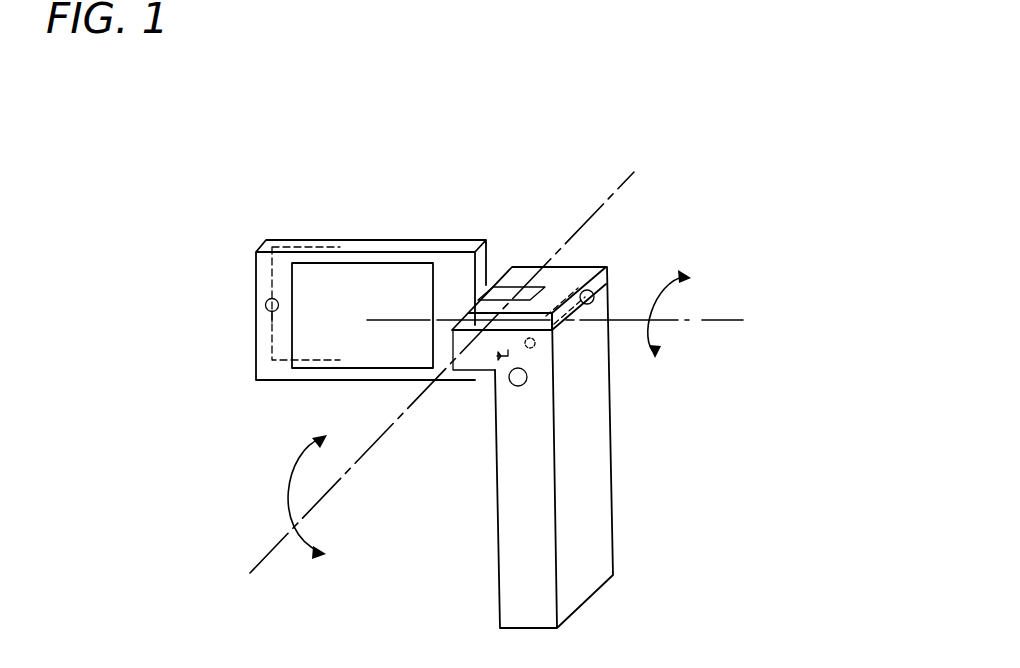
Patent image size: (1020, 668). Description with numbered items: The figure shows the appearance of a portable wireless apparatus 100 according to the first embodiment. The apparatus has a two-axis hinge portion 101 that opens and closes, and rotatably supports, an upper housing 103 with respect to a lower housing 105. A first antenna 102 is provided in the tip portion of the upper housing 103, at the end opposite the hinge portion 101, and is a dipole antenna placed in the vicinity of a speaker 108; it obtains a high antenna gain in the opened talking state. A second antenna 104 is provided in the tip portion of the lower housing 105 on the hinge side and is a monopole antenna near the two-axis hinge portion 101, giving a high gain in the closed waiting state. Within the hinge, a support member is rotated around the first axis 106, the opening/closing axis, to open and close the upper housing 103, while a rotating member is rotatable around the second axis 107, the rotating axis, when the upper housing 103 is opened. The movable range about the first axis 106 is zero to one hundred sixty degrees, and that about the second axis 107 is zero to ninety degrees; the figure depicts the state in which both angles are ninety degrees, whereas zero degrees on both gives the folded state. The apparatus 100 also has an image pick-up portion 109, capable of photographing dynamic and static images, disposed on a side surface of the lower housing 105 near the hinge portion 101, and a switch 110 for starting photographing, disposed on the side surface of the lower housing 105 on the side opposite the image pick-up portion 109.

The portable wireless apparatus 100 is at (451, 150).
The two-axis hinge portion 101 is at (512, 268).
The first antenna 102 is at (292, 247).
The upper housing 103 is at (393, 245).
The second antenna 104 is at (574, 266).
The lower housing 105 is at (590, 517).
The first axis 106 is at (360, 465).
The second axis 107 is at (717, 322).
The speaker 108 is at (253, 305).
The image pick-up portion 109 is at (610, 290).
The switch 110 is at (517, 387).